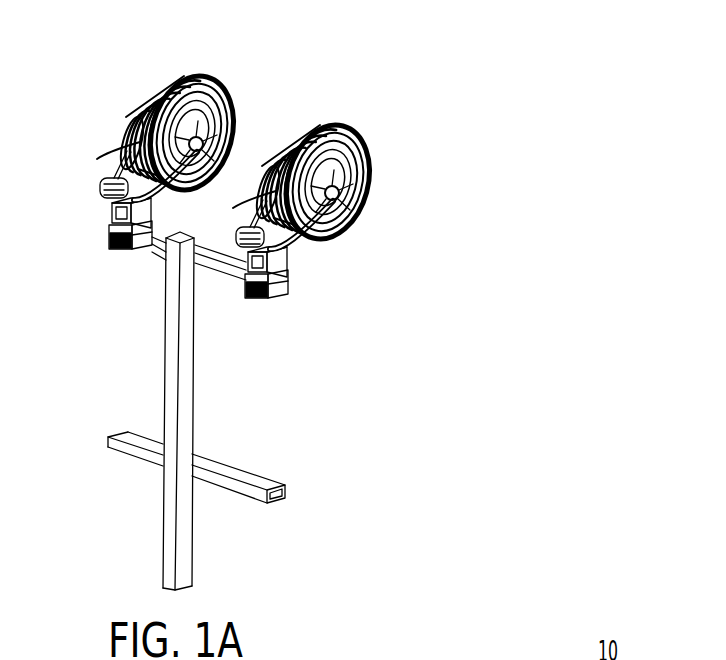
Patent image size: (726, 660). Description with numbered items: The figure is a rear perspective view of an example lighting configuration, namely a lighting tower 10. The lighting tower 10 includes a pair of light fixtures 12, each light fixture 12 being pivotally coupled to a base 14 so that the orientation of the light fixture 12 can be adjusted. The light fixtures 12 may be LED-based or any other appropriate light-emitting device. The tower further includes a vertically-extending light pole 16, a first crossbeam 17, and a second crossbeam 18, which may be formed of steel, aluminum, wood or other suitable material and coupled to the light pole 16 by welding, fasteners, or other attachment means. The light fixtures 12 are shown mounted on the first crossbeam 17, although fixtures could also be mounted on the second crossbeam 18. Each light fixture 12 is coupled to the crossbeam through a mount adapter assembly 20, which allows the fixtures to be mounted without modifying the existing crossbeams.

The lighting tower 10 is at (378, 92).
The light fixture 12 is at (227, 107).
The base 14 is at (112, 205).
The light pole 16 is at (186, 432).
The first crossbeam 17 is at (155, 243).
The second crossbeam 18 is at (244, 481).
The mount adapter assembly 20 is at (114, 266).